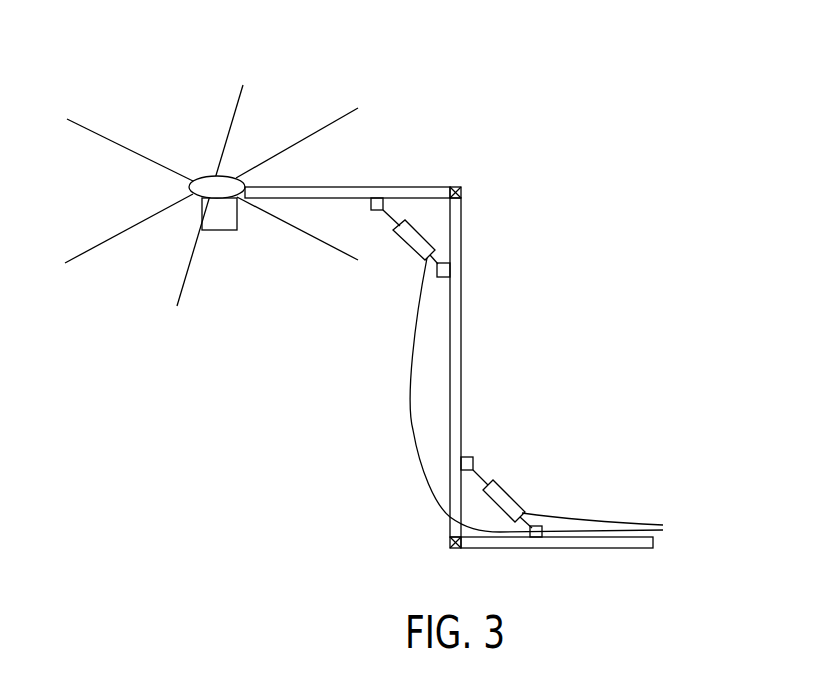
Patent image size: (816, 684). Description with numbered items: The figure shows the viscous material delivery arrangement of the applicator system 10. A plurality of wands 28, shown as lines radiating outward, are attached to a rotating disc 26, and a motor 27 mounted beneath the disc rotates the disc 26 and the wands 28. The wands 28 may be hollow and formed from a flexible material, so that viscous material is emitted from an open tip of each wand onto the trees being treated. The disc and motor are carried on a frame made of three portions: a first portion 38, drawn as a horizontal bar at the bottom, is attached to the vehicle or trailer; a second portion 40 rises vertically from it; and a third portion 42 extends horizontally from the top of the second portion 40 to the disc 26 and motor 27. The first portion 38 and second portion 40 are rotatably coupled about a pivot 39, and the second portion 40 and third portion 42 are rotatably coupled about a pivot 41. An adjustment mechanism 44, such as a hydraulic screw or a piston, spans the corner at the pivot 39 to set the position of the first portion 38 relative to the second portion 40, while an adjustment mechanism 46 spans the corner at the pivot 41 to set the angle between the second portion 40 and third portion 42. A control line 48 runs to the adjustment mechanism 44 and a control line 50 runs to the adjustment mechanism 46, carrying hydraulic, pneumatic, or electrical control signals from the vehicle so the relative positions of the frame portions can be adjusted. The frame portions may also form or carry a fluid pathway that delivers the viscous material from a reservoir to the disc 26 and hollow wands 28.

The applicator system 10 is at (330, 76).
The rotating disc 26 is at (208, 176).
The motor 27 is at (232, 232).
The wands 28 is at (92, 133).
The first portion 38 is at (617, 549).
The pivot 39 is at (448, 543).
The second portion 40 is at (462, 310).
The pivot 41 is at (462, 195).
The third portion 42 is at (418, 187).
The adjustment mechanism 44 is at (508, 496).
The adjustment mechanism 46 is at (408, 243).
The control line 48 is at (568, 520).
The control line 50 is at (413, 445).